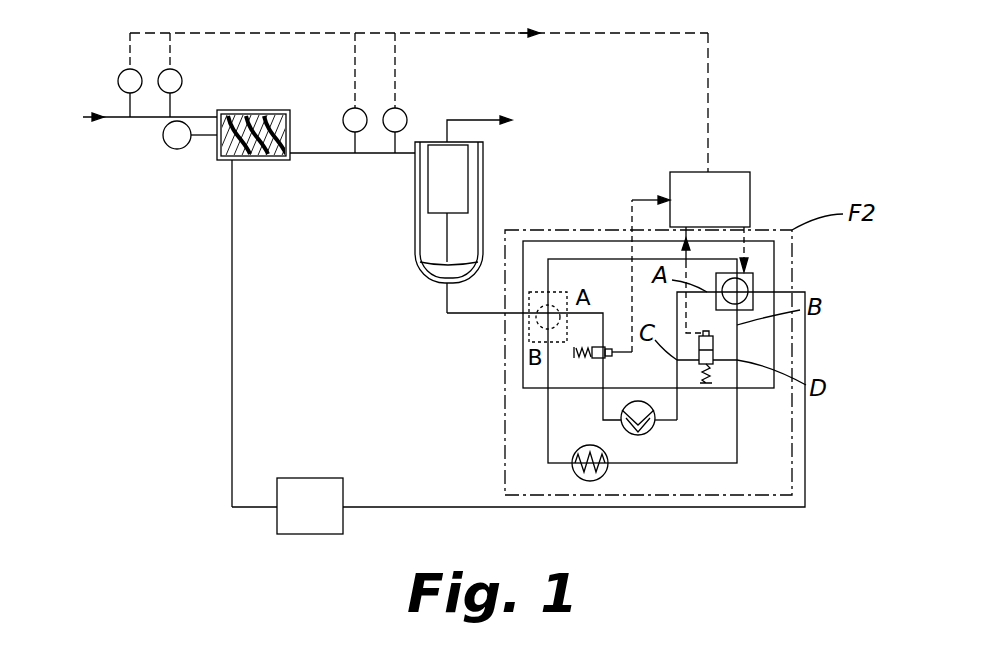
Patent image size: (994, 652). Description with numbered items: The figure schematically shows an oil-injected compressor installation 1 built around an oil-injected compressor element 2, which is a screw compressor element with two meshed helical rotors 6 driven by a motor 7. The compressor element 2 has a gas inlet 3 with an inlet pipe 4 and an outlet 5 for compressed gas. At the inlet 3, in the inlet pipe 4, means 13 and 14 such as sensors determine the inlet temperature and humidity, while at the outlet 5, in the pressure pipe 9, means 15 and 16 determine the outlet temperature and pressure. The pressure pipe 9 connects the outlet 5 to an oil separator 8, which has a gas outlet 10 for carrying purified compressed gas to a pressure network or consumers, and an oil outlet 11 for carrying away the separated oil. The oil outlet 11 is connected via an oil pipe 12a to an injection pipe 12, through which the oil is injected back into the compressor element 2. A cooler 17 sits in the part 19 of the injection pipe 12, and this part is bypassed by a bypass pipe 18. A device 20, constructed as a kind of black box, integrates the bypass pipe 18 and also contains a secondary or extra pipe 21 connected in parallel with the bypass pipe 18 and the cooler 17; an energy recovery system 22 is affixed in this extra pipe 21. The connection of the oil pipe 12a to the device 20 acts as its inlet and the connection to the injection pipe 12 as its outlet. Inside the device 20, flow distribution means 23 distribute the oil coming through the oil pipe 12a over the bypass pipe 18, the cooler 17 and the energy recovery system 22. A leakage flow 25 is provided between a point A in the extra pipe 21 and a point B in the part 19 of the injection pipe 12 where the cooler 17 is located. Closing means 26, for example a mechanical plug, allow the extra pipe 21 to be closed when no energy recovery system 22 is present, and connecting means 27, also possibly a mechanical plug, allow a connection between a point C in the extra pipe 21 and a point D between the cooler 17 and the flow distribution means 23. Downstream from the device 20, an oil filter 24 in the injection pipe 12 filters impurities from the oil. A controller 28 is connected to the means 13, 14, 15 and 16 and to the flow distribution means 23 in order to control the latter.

The oil-injected compressor installation 1 is at (103, 44).
The oil-injected compressor element 2 is at (222, 164).
The gas inlet 3 is at (220, 112).
The inlet pipe 4 is at (116, 118).
The outlet 5 is at (293, 152).
The helical rotors 6 is at (258, 118).
The motor 7 is at (172, 150).
The oil separator 8 is at (415, 220).
The pressure pipe 9 is at (338, 158).
The gas outlet 10 is at (472, 118).
The oil outlet 11 is at (445, 290).
The injection pipe 12 is at (418, 505).
The oil pipe 12a is at (462, 315).
The temperature determining means 13 is at (118, 79).
The humidity determining means 14 is at (182, 78).
The temperature determining means 15 is at (346, 108).
The pressure determining means 16 is at (401, 108).
The cooler 17 is at (595, 482).
The bypass pipe 18 is at (572, 258).
The part of the injection pipe 19 is at (713, 465).
The device 20 is at (765, 392).
The extra pipe 21 is at (600, 402).
The energy recovery system 22 is at (652, 430).
The flow distribution means 23 is at (812, 272).
The oil filter 24 is at (308, 518).
The leakage flow 25 is at (716, 326).
The closing means 26 is at (592, 360).
The connecting means 27 is at (713, 365).
The controller 28 is at (735, 172).